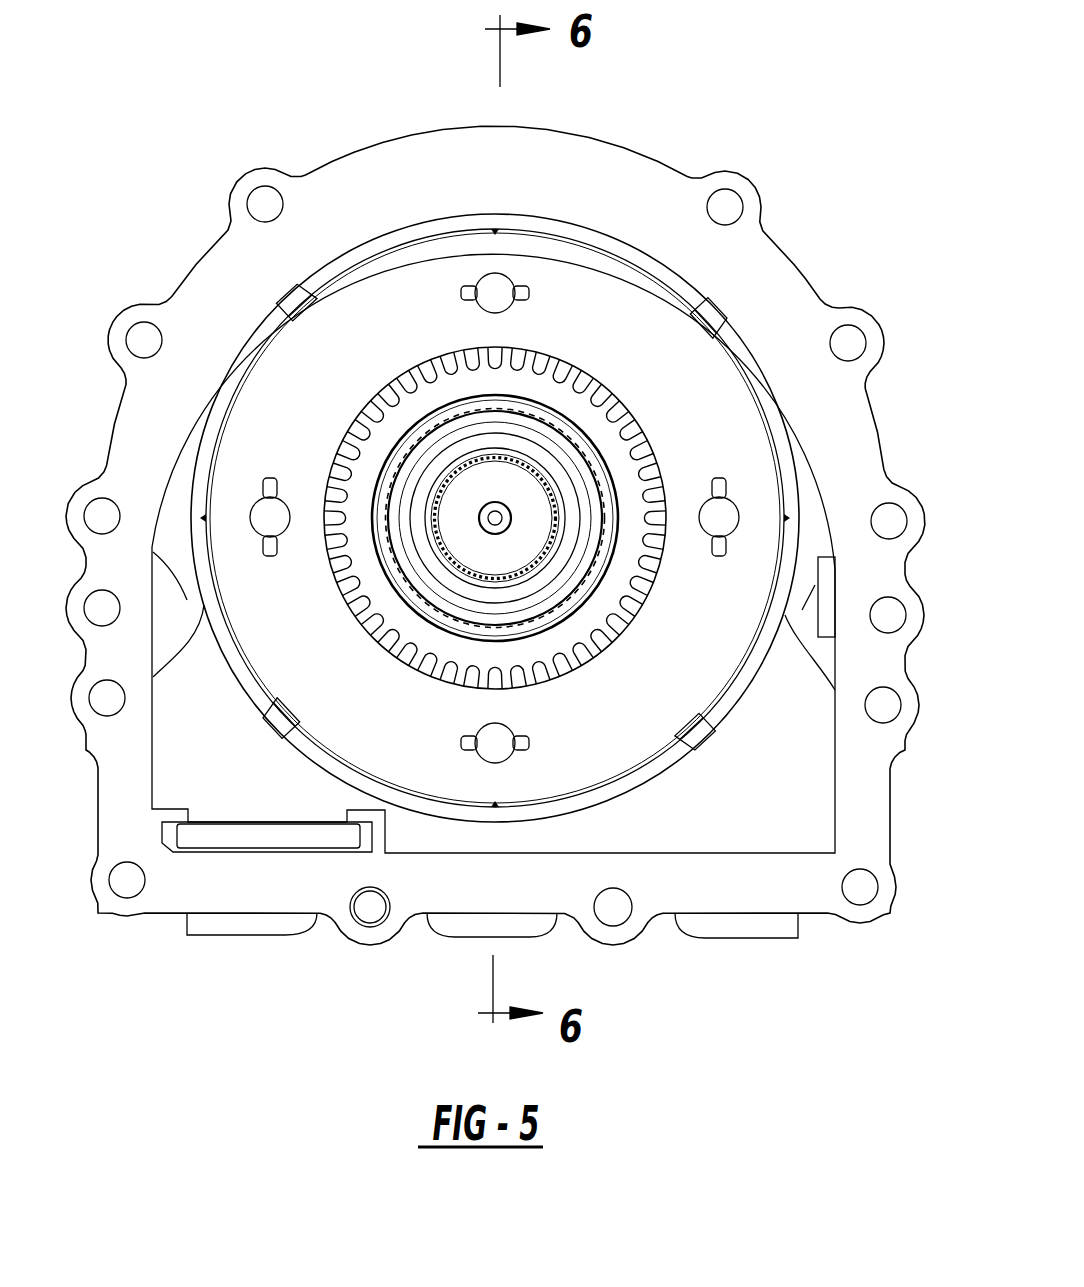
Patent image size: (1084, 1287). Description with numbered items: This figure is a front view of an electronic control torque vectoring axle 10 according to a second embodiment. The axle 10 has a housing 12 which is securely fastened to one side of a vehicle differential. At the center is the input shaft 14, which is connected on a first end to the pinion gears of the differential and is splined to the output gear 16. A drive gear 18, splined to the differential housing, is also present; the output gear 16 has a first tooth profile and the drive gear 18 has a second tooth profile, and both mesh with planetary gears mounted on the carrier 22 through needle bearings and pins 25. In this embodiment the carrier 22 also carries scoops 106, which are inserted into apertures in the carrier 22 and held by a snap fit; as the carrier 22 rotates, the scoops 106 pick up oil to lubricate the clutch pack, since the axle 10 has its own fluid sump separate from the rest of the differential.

The electronic control torque vectoring axle 10 is at (921, 202).
The housing 12 is at (768, 257).
The input shaft 14 is at (530, 515).
The output gear 16 is at (327, 498).
The drive gear 18 is at (558, 395).
The carrier 22 is at (565, 282).
The pin 25 is at (719, 520).
The scoop 106 is at (295, 303).